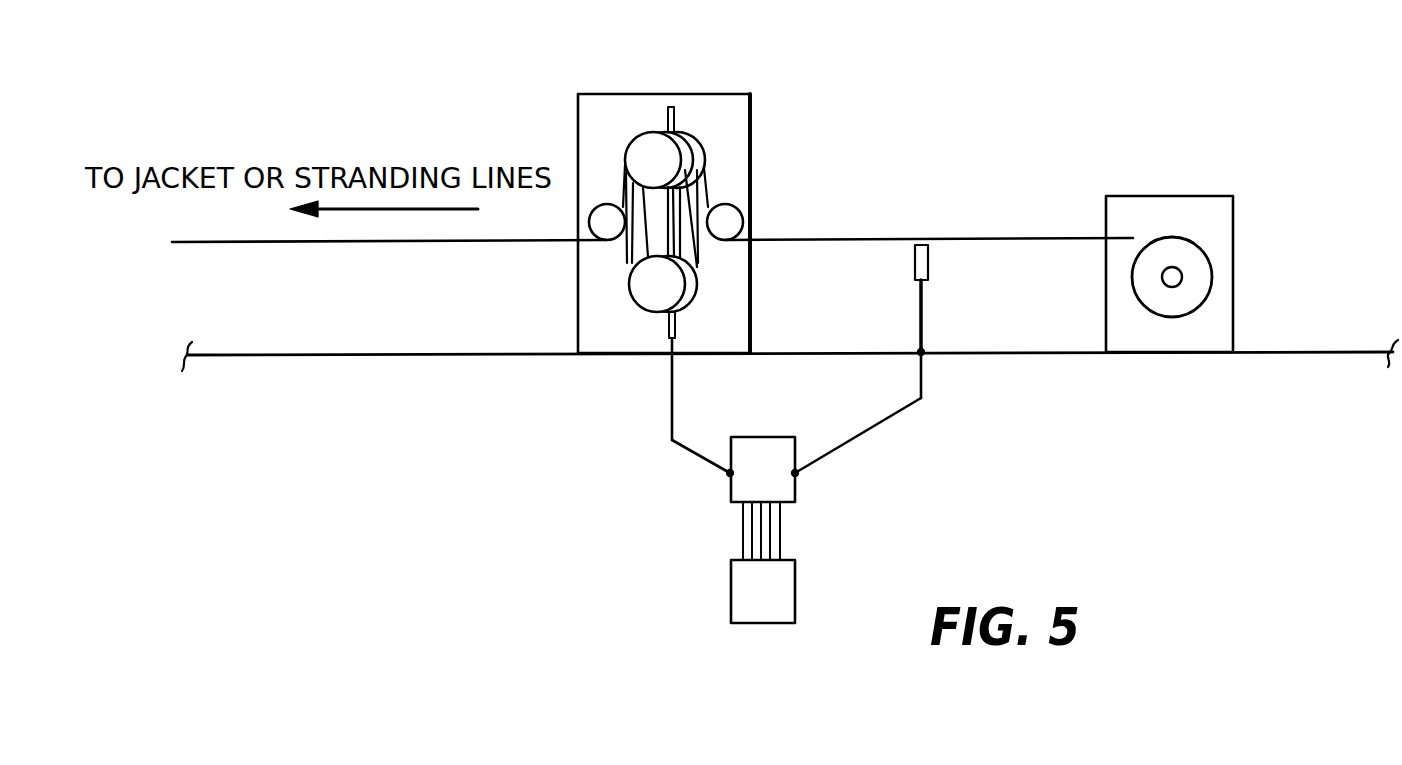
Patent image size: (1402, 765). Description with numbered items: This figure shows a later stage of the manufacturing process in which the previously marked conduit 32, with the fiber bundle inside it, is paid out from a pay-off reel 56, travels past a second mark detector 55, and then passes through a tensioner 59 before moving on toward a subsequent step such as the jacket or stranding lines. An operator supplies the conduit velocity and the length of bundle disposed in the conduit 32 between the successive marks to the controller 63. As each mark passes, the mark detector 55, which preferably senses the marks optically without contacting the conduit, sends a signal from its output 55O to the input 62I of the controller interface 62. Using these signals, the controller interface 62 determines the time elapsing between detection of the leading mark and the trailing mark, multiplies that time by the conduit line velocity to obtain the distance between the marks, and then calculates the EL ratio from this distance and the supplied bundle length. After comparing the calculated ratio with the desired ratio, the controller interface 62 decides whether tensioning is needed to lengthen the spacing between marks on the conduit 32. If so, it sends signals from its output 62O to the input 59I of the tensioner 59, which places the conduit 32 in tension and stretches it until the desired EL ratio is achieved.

The conduit 32 is at (826, 237).
The second mark detector 55 is at (928, 262).
The mark detector output 55O is at (924, 356).
The pay-off reel 56 is at (1182, 255).
The tensioner 59 is at (652, 100).
The tensioner input 59I is at (672, 340).
The controller interface 62 is at (765, 437).
The controller interface output 62O is at (725, 478).
The controller interface input 62I is at (800, 477).
The controller 63 is at (795, 597).